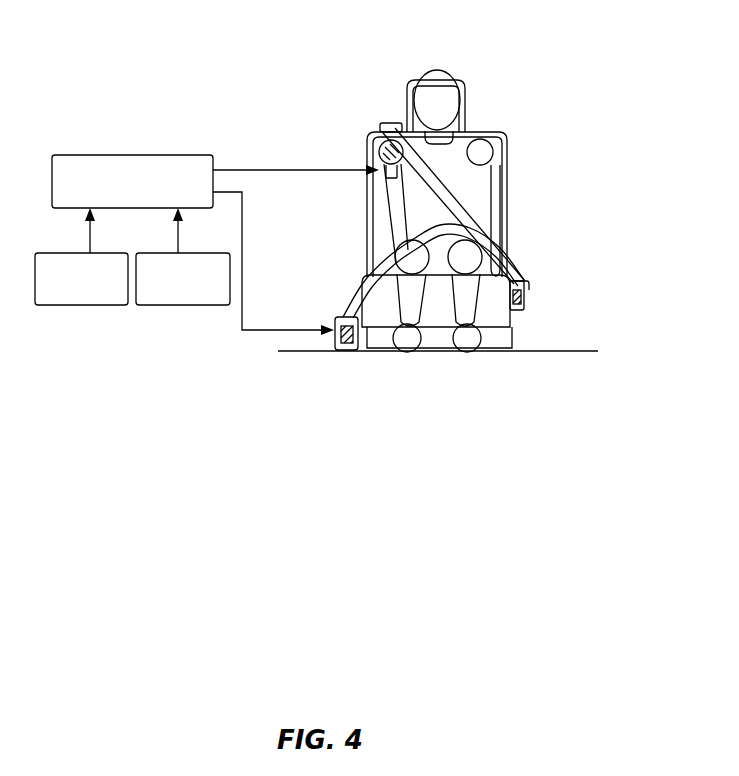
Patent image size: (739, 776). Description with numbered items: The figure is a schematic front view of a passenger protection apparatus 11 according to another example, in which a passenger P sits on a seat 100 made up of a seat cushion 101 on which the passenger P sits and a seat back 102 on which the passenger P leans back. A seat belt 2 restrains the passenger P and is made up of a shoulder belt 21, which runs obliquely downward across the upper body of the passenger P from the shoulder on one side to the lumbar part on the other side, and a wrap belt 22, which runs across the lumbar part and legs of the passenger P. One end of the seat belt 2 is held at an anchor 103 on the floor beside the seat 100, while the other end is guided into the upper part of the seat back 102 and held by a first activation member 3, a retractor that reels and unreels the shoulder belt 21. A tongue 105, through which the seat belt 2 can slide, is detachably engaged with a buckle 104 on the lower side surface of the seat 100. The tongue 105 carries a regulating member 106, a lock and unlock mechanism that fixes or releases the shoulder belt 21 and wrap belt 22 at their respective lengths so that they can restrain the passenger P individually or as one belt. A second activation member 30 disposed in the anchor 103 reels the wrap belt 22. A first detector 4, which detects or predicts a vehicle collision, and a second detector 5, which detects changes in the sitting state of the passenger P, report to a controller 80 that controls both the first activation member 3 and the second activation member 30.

The controller 80 is at (187, 155).
The first detector 4 is at (116, 253).
The second detector 5 is at (202, 253).
The passenger P is at (433, 66).
The first activation member 3 is at (362, 133).
The passenger protection apparatus 11 is at (461, 205).
The seat back 102 is at (505, 137).
The seat cushion 101 is at (373, 288).
The seat 100 is at (534, 329).
The seat belt 2 is at (472, 223).
The shoulder belt 21 is at (448, 197).
The wrap belt 22 is at (455, 212).
The anchor 103 is at (317, 340).
The second activation member 30 is at (345, 353).
The buckle 104 is at (553, 298).
The tongue 105 is at (522, 278).
The regulating member 106 is at (528, 302).